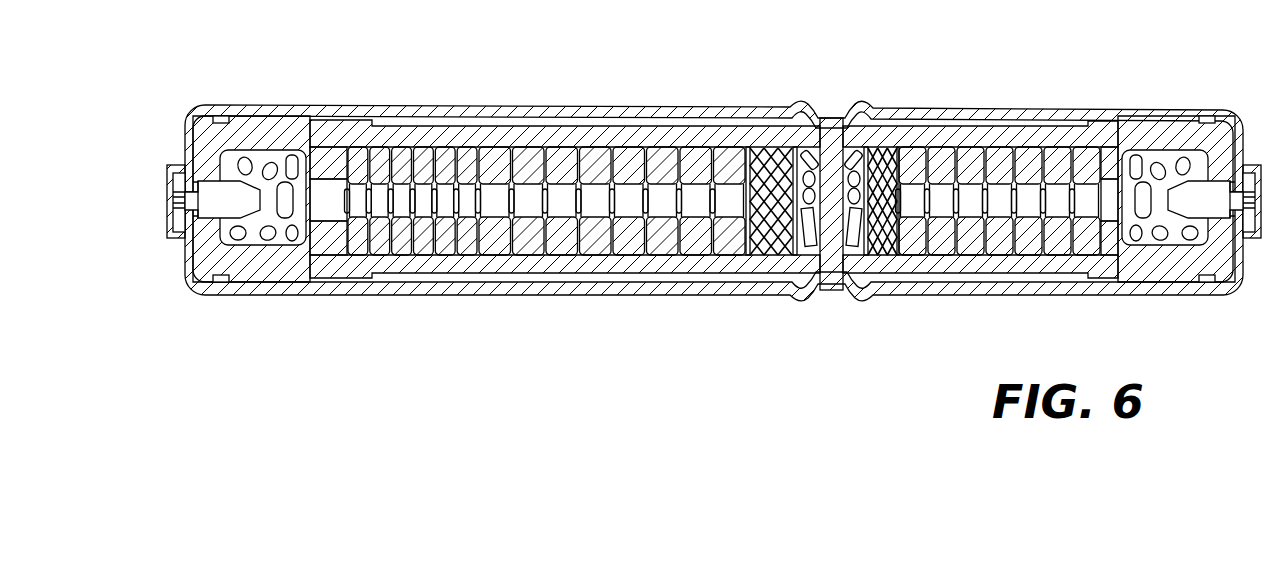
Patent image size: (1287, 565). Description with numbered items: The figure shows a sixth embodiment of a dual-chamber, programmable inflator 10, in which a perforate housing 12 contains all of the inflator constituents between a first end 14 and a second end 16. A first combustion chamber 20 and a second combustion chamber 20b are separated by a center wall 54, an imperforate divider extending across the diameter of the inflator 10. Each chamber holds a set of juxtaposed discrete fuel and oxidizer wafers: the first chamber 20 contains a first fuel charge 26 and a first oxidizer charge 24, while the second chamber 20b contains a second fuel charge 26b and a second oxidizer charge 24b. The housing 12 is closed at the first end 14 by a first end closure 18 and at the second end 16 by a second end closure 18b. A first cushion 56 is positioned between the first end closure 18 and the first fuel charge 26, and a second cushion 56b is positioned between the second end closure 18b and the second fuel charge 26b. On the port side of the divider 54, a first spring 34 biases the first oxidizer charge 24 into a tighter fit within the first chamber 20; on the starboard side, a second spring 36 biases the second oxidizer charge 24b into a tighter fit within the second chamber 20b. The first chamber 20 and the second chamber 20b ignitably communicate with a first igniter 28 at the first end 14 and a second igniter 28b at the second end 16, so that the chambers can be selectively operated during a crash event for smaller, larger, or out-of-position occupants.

The inflator 10 is at (168, 75).
The perforate housing 12 is at (475, 108).
The first end 14 is at (163, 138).
The second end 16 is at (1247, 288).
The first end closure 18 is at (206, 247).
The second end closure 18b is at (1233, 157).
The first combustion chamber 20 is at (634, 140).
The second combustion chamber 20b is at (1030, 140).
The first oxidizer charge 24 is at (740, 263).
The second oxidizer charge 24b is at (1008, 263).
The first fuel charge 26 is at (468, 270).
The second fuel charge 26b is at (1093, 263).
The first igniter 28 is at (225, 185).
The second igniter 28b is at (1208, 218).
The first spring 34 is at (775, 135).
The second spring 36 is at (873, 258).
The center wall 54 is at (838, 140).
The first cushion 56 is at (327, 158).
The second cushion 56b is at (1203, 145).